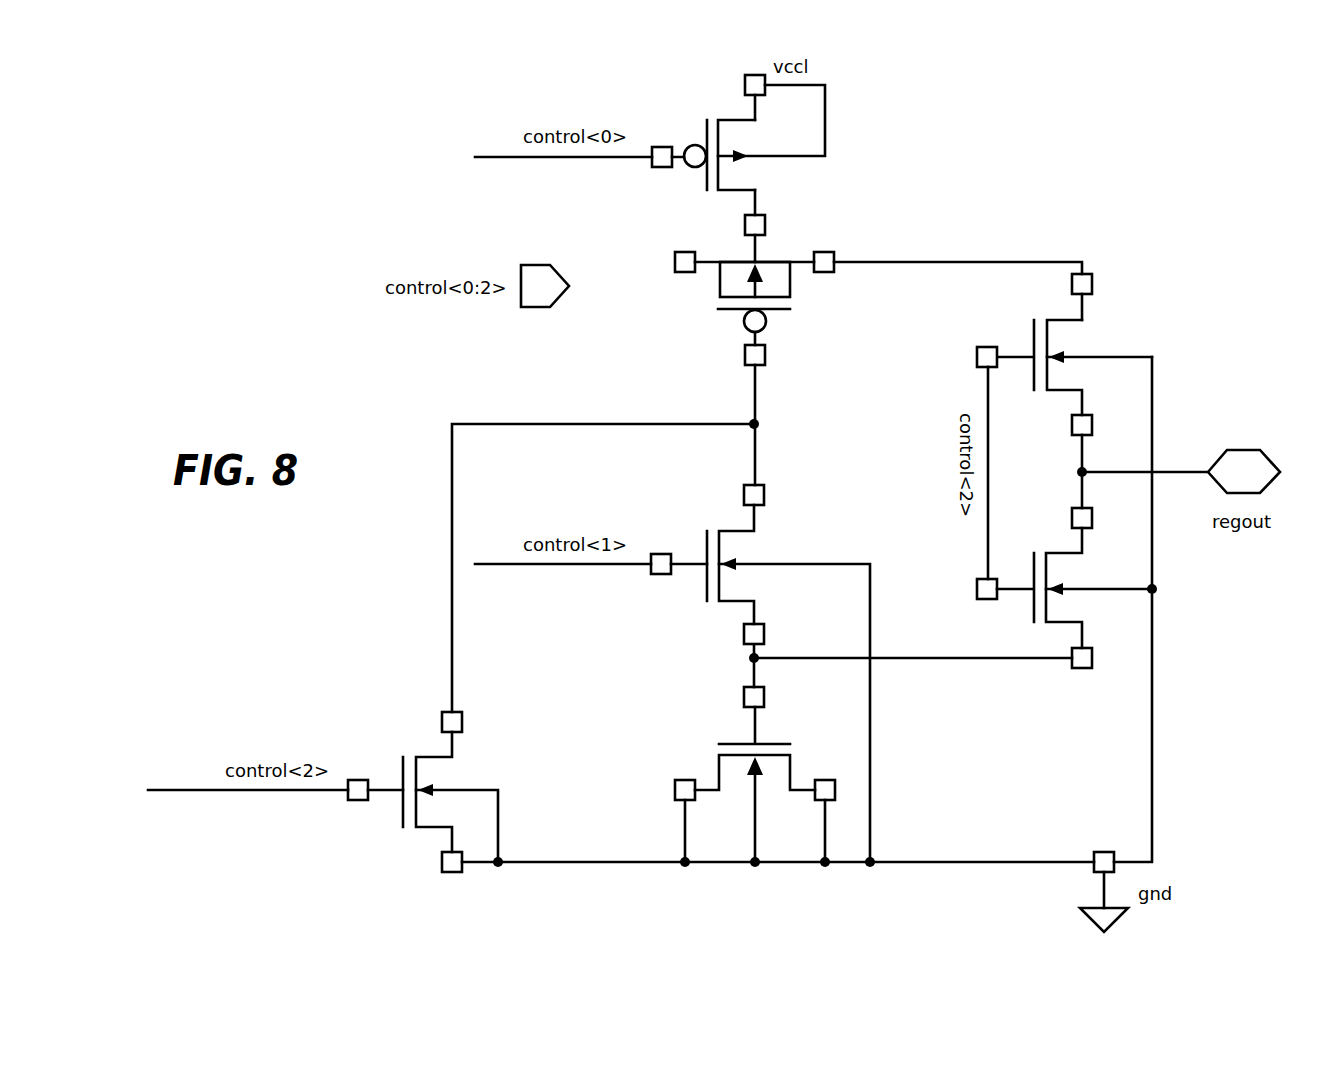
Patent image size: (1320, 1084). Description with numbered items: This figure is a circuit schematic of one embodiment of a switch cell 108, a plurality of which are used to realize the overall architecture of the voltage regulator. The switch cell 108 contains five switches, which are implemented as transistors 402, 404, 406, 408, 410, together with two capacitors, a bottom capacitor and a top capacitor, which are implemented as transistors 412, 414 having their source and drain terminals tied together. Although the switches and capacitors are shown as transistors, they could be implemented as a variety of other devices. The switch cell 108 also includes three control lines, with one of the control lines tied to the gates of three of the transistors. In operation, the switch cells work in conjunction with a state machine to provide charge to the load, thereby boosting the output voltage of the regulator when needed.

The switch cell 108 is at (1026, 152).
The transistor 402 is at (425, 757).
The transistor 404 is at (722, 118).
The transistor 406 is at (722, 530).
The transistor 408 is at (1055, 319).
The transistor 410 is at (1055, 624).
The transistor 412 is at (790, 293).
The transistor 414 is at (793, 765).